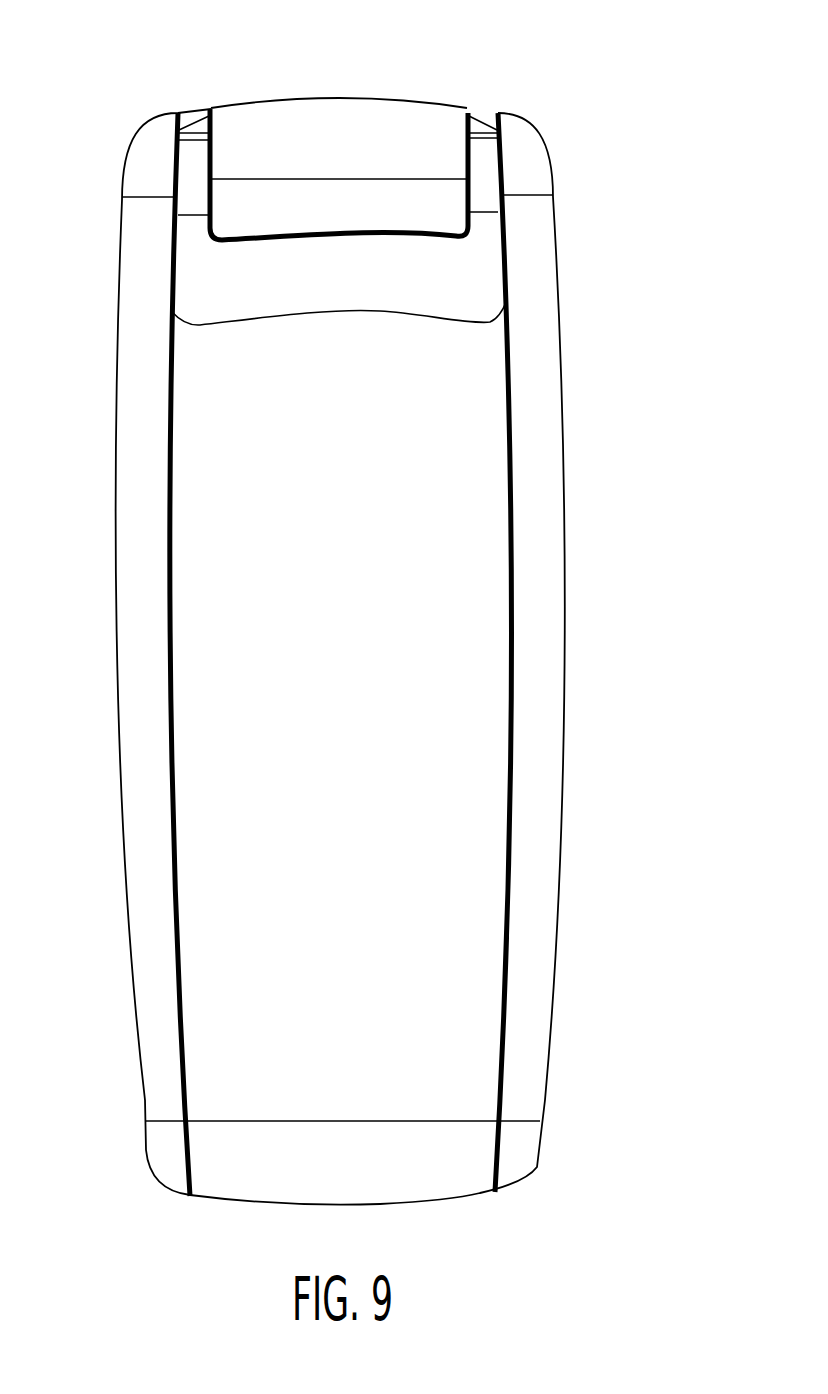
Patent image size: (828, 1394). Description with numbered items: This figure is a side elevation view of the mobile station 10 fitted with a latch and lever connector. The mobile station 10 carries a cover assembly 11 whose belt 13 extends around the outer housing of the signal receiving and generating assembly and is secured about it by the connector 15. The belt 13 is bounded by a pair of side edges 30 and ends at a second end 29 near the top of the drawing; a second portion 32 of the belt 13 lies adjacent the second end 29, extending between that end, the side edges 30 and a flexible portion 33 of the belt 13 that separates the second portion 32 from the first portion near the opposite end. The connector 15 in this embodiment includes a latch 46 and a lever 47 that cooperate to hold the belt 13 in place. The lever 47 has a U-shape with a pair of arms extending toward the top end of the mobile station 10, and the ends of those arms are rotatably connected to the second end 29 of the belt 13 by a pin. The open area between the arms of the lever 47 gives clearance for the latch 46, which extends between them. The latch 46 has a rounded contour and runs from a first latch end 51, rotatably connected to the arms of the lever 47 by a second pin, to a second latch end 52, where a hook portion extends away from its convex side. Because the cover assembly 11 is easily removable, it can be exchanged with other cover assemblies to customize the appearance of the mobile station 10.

The mobile station 10 is at (598, 152).
The cover assembly 11 is at (282, 63).
The belt 13 is at (547, 392).
The connector 15 is at (487, 168).
The second end 29 is at (148, 143).
The side edges 30 is at (113, 582).
The second portion 32 is at (475, 695).
The flexible portion 33 is at (537, 1165).
The latch 46 is at (352, 155).
The lever 47 is at (352, 287).
The first latch end 51 is at (435, 207).
The second latch end 52 is at (367, 93).